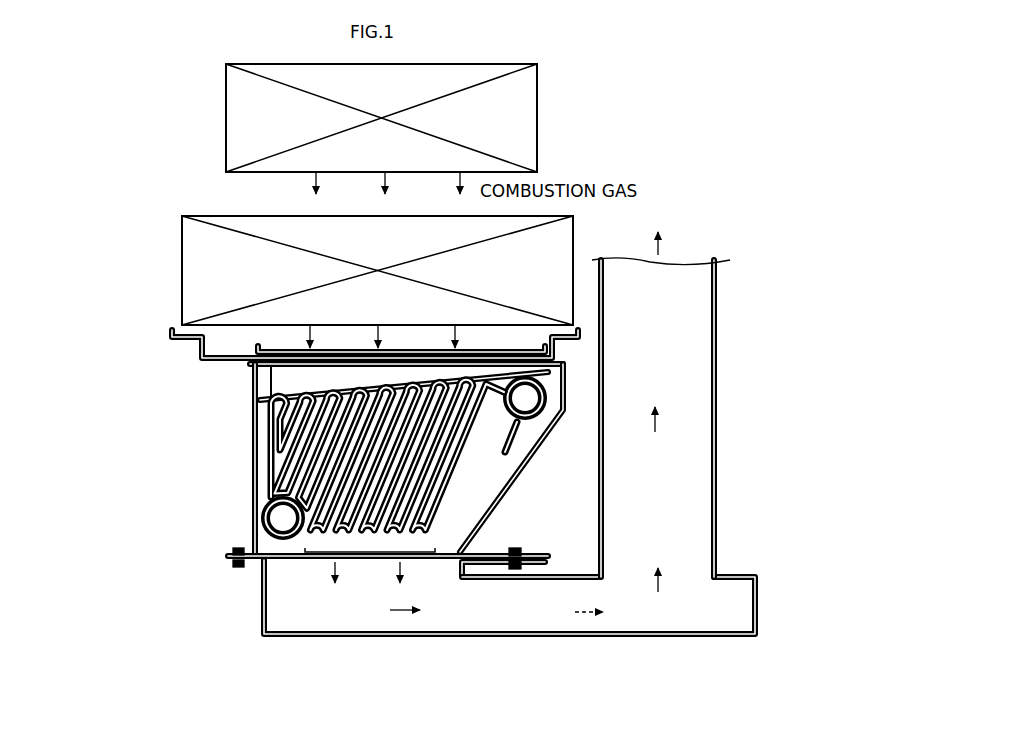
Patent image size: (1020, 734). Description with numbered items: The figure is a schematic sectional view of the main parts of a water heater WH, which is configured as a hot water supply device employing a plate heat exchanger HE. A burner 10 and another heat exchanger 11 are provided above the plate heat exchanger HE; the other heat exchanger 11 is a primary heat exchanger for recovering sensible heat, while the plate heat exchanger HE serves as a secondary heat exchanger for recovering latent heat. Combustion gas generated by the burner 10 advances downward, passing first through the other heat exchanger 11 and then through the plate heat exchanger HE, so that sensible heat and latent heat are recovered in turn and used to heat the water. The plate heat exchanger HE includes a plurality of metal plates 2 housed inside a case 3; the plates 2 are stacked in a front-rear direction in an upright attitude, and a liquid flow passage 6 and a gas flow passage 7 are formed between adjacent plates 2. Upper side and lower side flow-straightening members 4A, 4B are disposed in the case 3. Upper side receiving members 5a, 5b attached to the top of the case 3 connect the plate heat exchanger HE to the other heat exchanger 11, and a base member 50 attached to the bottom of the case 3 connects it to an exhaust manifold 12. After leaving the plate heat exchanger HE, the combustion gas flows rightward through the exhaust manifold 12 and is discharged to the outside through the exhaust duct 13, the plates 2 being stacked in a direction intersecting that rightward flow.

The water heater WH is at (136, 104).
The plate heat exchanger HE is at (200, 386).
The burner 10 is at (243, 102).
The other heat exchanger 11 is at (185, 242).
The upper side receiving member 5a is at (178, 334).
The upper side receiving member 5b is at (258, 346).
The liquid flow passage 6 is at (370, 390).
The gas flow passage 7 is at (344, 396).
The upper side flow-straightening member 4A is at (258, 380).
The plates 2 is at (255, 442).
The case 3 is at (250, 485).
The lower side flow-straightening member 4B is at (250, 550).
The base member 50 is at (488, 558).
The exhaust manifold 12 is at (621, 636).
The exhaust duct 13 is at (718, 452).